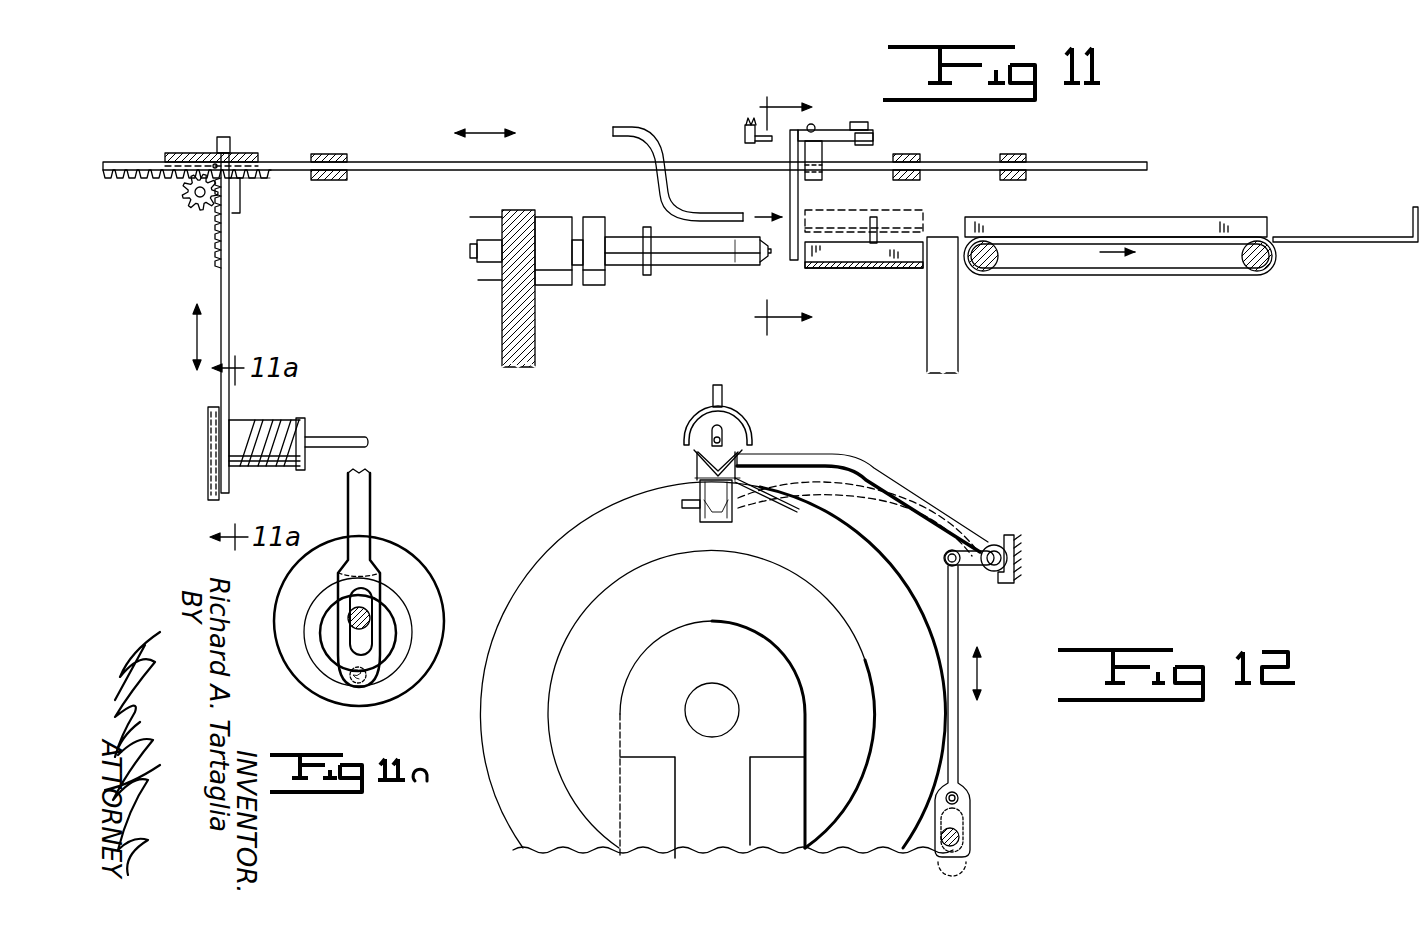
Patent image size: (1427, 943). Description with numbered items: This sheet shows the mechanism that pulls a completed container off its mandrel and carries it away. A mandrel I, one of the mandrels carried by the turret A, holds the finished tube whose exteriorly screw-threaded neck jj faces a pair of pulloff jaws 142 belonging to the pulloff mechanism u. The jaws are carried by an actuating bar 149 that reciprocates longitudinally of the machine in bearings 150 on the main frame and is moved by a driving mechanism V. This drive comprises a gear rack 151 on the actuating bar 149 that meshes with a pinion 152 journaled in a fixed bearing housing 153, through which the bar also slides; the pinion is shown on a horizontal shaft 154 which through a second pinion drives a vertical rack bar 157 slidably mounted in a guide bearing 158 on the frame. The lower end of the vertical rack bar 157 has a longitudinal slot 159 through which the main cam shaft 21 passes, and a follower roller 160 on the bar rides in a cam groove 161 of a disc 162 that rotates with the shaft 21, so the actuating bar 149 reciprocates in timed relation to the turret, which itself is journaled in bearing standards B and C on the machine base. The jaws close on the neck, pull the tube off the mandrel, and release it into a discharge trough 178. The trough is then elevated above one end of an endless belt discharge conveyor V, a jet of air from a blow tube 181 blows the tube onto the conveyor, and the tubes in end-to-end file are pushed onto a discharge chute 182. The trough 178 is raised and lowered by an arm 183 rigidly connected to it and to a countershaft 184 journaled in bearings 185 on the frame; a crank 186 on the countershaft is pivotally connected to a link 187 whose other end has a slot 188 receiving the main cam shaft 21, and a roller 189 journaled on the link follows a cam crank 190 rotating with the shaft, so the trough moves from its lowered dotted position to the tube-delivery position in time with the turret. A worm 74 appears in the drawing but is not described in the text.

In FIG. 11, the actuating bar 149 is at (404, 164).
In FIG. 11, the bearings 150 is at (340, 154).
In FIG. 11, the gear rack 151 is at (255, 182).
In FIG. 11, the pinion 152 is at (182, 196).
In FIG. 11, the bearing housing 153 is at (236, 160).
In FIG. 11, the horizontal shaft 154 is at (195, 212).
In FIG. 11, the vertical rack bar 157 is at (232, 258).
In FIG. 11a, the vertical rack bar 157 is at (372, 513).
In FIG. 11, the guide bearing 158 is at (310, 309).
In FIG. 11, the worm 74 is at (272, 462).
In FIG. 11, the bearing standard C is at (207, 410).
In FIG. 11, the driving mechanism / endless belt discharge conveyor V is at (1170, 232).
In FIG. 12, the driving mechanism / endless belt discharge conveyor V is at (695, 518).
In FIG. 11, the mandrel I is at (628, 266).
In FIG. 11, the screw-threaded neck jj is at (760, 262).
In FIG. 11, the blow tube 181 is at (742, 214).
In FIG. 12, the blow tube 181 is at (726, 438).
In FIG. 11, the pulloff jaws 142 is at (795, 262).
In FIG. 11, the discharge trough 178 is at (846, 268).
In FIG. 12, the discharge trough 178 is at (697, 456).
In FIG. 11, the discharge chute 182 is at (1322, 244).
In FIG. 11, the pulloff mechanism u is at (849, 126).
In FIG. 11a, the longitudinal slot 159 is at (372, 592).
In FIG. 11a, the follower roller 160 is at (362, 688).
In FIG. 11a, the cam groove 161 is at (331, 668).
In FIG. 11a, the disc 162 is at (425, 602).
In FIG. 11a, the main cam shaft 21 is at (372, 632).
In FIG. 12, the main cam shaft 21 is at (962, 840).
In FIG. 12, the arm 183 is at (926, 512).
In FIG. 12, the countershaft 184 is at (1006, 557).
In FIG. 12, the bearings 185 is at (1014, 578).
In FIG. 12, the crank 186 is at (978, 570).
In FIG. 12, the link 187 is at (960, 742).
In FIG. 12, the slot 188 is at (964, 811).
In FIG. 12, the roller 189 is at (960, 794).
In FIG. 12, the cam crank 190 is at (942, 826).
In FIG. 12, the turret A is at (568, 540).
In FIG. 12, the bearing standard B is at (655, 838).